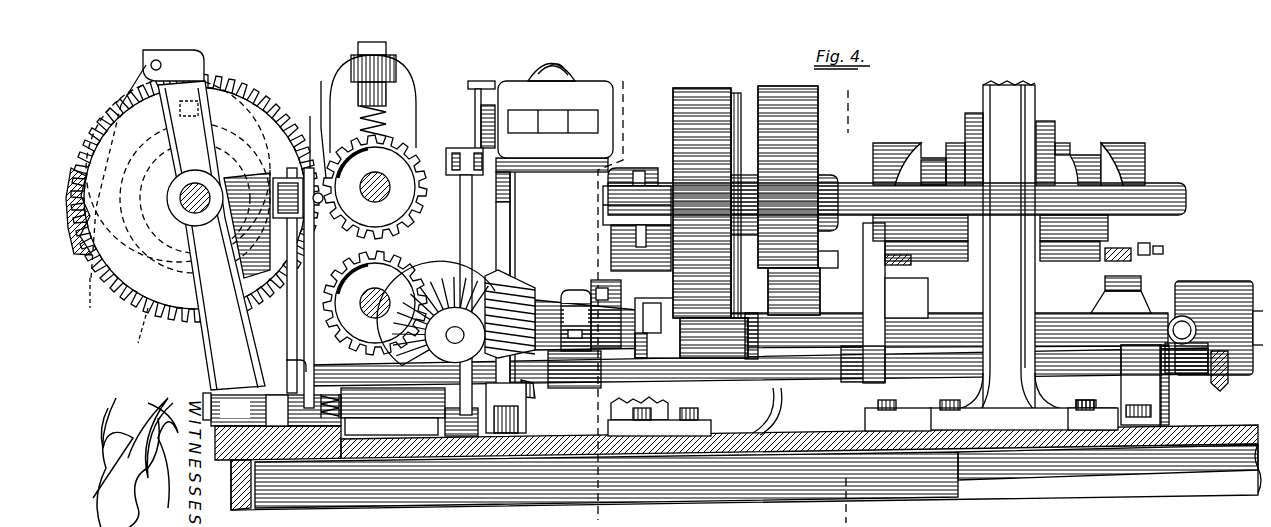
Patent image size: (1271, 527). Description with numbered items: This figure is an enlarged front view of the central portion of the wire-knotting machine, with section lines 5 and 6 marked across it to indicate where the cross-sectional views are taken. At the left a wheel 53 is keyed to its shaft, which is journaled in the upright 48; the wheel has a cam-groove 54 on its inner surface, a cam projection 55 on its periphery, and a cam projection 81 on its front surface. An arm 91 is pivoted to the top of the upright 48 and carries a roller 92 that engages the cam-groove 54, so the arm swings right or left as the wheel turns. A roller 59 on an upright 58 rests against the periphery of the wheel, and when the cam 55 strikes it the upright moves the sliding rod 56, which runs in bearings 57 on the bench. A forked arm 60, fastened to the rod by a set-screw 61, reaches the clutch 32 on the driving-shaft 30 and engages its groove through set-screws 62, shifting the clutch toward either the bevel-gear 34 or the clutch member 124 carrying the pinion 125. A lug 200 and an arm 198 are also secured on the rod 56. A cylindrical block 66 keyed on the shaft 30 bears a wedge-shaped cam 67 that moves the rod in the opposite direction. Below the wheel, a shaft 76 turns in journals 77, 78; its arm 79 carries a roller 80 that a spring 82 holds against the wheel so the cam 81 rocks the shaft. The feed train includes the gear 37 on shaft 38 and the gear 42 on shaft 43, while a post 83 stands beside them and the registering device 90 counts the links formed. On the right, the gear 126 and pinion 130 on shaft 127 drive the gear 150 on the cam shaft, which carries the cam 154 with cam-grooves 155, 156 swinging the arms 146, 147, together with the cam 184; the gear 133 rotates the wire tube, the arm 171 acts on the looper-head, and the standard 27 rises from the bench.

The section line 5 5 is at (609, 294).
The section line 6 6 is at (854, 299).
The upright or standard 27 is at (1003, 78).
The driving-shaft 30 is at (948, 312).
The clutch 32 is at (617, 300).
The bevel-gear 34 is at (514, 264).
The gear 37 is at (345, 300).
The shaft 38 is at (375, 303).
The gear 42 is at (400, 103).
The shaft 43 is at (372, 172).
The upright 48 is at (206, 220).
The wheel 53 is at (224, 112).
The cam-groove 54 is at (136, 336).
The cam projection 55 is at (304, 129).
The sliding rod 56 is at (722, 365).
The bearings 57 is at (1160, 393).
The upright 58 is at (310, 323).
The roller 59 is at (324, 119).
The forked arm 60 is at (560, 282).
The set-screw 61 is at (567, 322).
The set-screws 62 is at (600, 250).
The cylindrical block 66 is at (1200, 278).
The cam projection 67 is at (1217, 372).
The shaft 76 is at (390, 397).
The journal 77 is at (272, 409).
The journal 78 is at (506, 408).
The arm 79 is at (290, 310).
The roller 80 is at (298, 187).
The cam projection 81 is at (210, 72).
The spring 82 is at (281, 352).
The post 83 is at (452, 228).
The registering device 90 is at (554, 239).
The arm 91 is at (122, 92).
The roller 92 is at (85, 246).
The clutch member 124 is at (705, 345).
The pinion 125 is at (756, 411).
The gear 126 is at (713, 85).
The shaft 127 is at (1152, 178).
The pinion 130 is at (818, 255).
The gear 133 is at (908, 140).
The arm 146 is at (905, 252).
The arm 147 is at (1142, 238).
The gear 150 is at (795, 85).
The cam 154 is at (1142, 130).
The cam-groove 155 is at (925, 147).
The cam-groove 156 is at (1082, 140).
The arm 171 is at (965, 105).
The cam 184 is at (1042, 115).
The arm 198 is at (783, 385).
The lug 200 is at (870, 300).